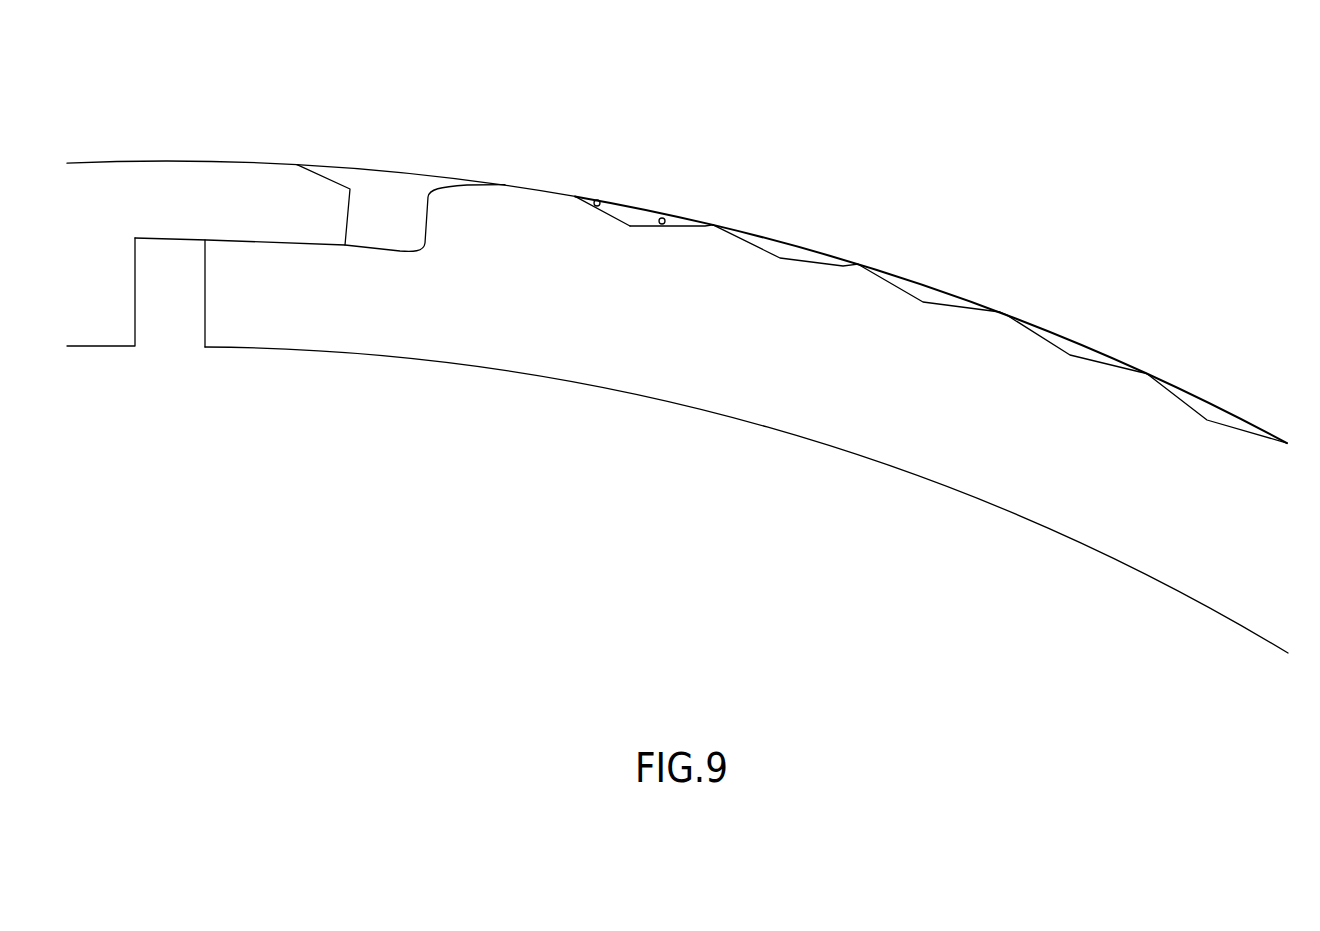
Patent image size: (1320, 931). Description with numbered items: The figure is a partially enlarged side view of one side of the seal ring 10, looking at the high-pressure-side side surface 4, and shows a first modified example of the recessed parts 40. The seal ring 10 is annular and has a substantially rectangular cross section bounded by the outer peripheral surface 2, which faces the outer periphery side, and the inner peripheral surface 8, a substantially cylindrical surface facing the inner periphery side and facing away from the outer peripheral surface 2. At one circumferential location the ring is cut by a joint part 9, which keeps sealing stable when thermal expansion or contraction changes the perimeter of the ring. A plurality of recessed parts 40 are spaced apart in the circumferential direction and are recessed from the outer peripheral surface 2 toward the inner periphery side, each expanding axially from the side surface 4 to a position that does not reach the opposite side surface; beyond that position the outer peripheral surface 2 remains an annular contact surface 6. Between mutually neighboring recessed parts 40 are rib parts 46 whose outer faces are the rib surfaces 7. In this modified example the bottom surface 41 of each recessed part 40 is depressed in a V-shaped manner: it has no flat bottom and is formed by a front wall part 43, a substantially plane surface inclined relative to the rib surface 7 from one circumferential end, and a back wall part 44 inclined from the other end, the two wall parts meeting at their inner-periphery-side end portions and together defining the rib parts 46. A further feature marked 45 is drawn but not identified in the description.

The outer peripheral surface 2 is at (1102, 343).
The high-pressure-side side surface 4 is at (302, 302).
The contact surface 6 is at (1243, 417).
The rib surfaces 7 is at (711, 222).
The inner peripheral surface 8 is at (410, 360).
The joint part 9 is at (241, 200).
The seal ring 10 is at (884, 132).
The recessed parts 40 is at (652, 198).
The bottom surface 41 is at (627, 203).
The front wall part 43 is at (817, 260).
The back wall part 44 is at (744, 237).
The joint 45 is at (612, 204).
The rib parts 46 is at (713, 237).